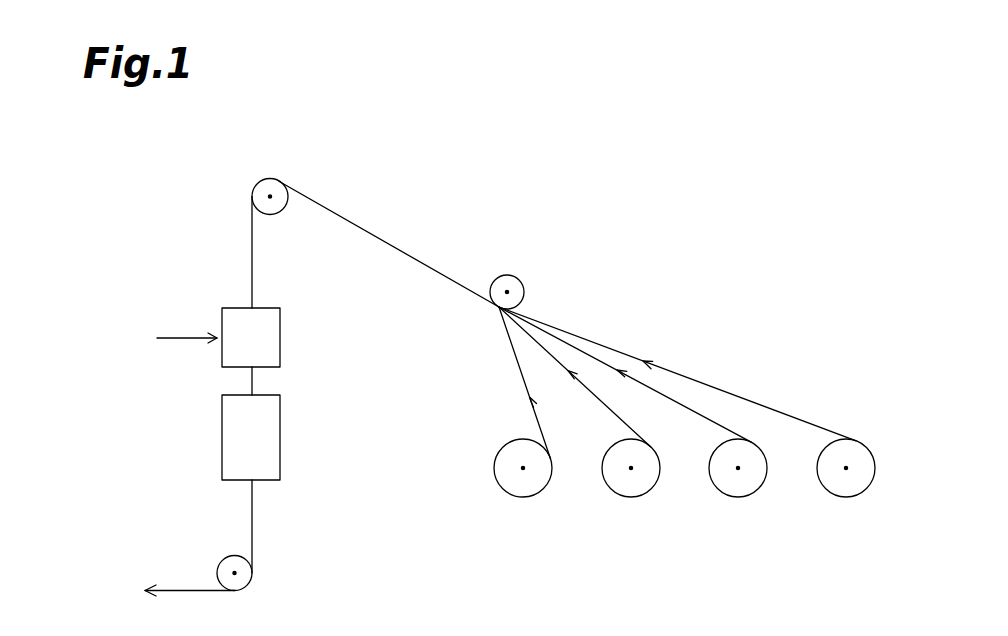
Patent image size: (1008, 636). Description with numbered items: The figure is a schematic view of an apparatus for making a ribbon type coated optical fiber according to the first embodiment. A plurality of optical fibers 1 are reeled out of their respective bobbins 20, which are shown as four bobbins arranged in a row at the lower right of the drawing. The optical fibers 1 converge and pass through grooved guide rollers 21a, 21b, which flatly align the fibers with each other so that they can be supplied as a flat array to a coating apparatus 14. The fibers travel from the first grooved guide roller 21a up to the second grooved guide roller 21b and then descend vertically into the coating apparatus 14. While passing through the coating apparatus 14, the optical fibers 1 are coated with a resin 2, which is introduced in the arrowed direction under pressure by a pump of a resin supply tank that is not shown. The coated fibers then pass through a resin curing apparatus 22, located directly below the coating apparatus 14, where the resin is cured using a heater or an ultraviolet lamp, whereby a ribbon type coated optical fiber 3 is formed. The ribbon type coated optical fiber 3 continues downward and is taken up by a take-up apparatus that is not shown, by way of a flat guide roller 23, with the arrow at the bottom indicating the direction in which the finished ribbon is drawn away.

The optical fibers 1 is at (253, 257).
The resin 2 is at (140, 340).
The ribbon type coated optical fiber 3 is at (252, 515).
The coating apparatus 14 is at (280, 335).
The bobbins 20 is at (510, 497).
The grooved guide roller 21a is at (515, 275).
The grooved guide roller 21b is at (277, 177).
The resin curing apparatus 22 is at (280, 439).
The flat guide roller 23 is at (252, 576).